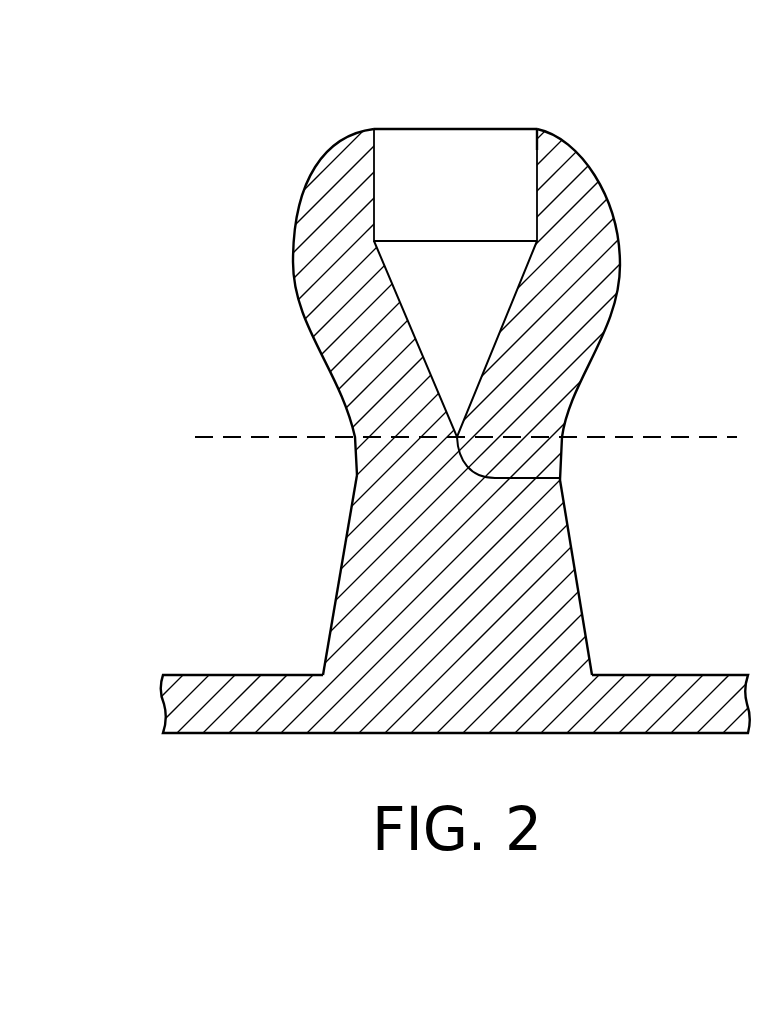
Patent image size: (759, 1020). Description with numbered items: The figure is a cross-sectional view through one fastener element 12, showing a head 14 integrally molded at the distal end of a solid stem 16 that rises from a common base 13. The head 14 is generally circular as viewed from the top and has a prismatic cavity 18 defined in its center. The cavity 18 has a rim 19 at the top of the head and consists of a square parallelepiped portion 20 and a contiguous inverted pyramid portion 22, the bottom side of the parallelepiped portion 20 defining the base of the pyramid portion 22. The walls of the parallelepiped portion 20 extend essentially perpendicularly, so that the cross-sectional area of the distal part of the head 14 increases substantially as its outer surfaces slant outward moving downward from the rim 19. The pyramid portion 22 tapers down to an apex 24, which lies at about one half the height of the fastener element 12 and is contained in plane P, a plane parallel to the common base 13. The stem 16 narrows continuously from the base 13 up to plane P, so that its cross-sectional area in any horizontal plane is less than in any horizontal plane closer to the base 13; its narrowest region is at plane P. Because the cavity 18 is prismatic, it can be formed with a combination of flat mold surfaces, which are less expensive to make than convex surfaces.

The fastener element 12 is at (379, 400).
The common base 13 is at (665, 675).
The head 14 is at (616, 297).
The stem 16 is at (568, 543).
The prismatic cavity 18 is at (452, 130).
The rim 19 is at (537, 129).
The parallelepiped portion 20 is at (473, 202).
The inverted pyramid portion 22 is at (476, 305).
The apex 24 is at (560, 478).
The plane P is at (703, 437).